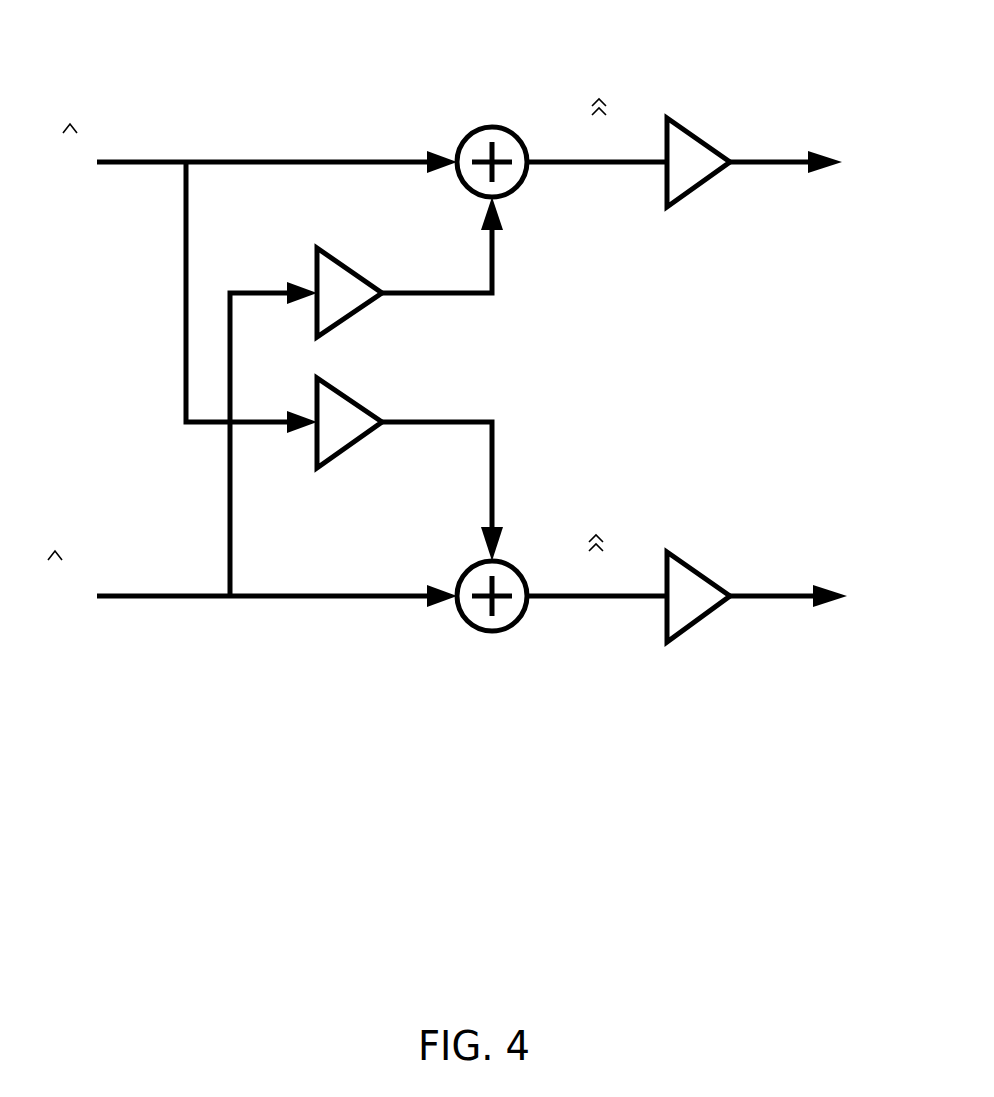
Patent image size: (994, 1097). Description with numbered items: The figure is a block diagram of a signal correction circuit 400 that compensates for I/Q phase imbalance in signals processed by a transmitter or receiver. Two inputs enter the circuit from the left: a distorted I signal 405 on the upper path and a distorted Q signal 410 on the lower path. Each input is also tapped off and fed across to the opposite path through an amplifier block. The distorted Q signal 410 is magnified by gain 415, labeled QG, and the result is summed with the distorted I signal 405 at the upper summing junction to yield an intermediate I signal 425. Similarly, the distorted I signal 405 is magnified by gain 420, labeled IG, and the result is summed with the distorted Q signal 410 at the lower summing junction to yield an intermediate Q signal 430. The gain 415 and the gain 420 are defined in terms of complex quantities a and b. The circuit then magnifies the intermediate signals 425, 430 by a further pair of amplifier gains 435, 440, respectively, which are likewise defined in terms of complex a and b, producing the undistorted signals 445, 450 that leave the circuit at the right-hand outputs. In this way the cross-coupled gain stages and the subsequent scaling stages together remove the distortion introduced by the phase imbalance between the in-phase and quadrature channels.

The signal correction circuit 400 is at (356, 319).
The distorted I signal 405 is at (76, 106).
The distorted Q signal 410 is at (62, 545).
The gain QG 415 is at (352, 263).
The gain IG 420 is at (375, 406).
The intermediate I signal 425 is at (628, 103).
The intermediate Q signal 430 is at (622, 530).
The gain 435 is at (693, 120).
The gain 440 is at (704, 566).
The undistorted signal 445 is at (820, 100).
The undistorted signal 450 is at (857, 524).